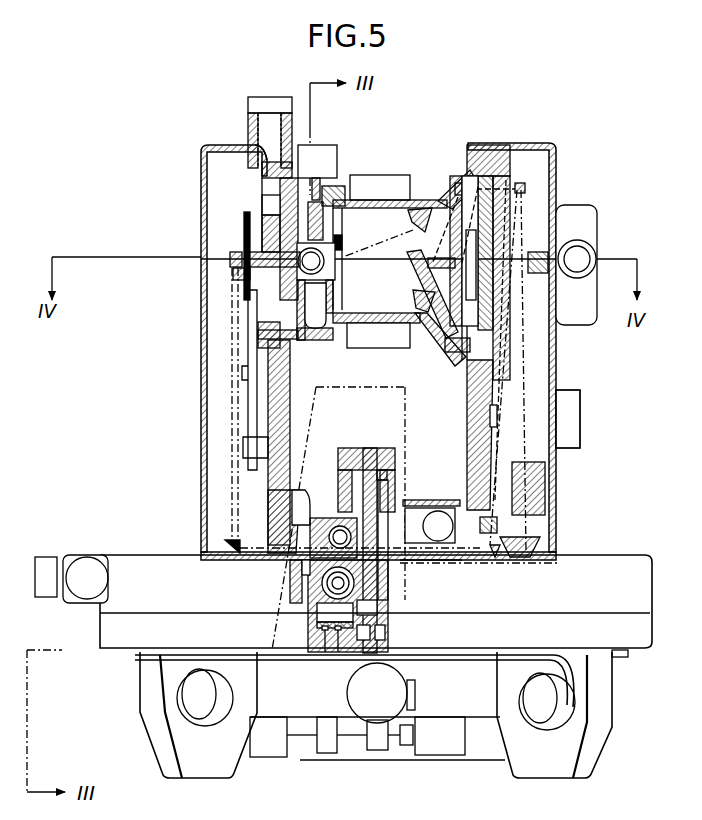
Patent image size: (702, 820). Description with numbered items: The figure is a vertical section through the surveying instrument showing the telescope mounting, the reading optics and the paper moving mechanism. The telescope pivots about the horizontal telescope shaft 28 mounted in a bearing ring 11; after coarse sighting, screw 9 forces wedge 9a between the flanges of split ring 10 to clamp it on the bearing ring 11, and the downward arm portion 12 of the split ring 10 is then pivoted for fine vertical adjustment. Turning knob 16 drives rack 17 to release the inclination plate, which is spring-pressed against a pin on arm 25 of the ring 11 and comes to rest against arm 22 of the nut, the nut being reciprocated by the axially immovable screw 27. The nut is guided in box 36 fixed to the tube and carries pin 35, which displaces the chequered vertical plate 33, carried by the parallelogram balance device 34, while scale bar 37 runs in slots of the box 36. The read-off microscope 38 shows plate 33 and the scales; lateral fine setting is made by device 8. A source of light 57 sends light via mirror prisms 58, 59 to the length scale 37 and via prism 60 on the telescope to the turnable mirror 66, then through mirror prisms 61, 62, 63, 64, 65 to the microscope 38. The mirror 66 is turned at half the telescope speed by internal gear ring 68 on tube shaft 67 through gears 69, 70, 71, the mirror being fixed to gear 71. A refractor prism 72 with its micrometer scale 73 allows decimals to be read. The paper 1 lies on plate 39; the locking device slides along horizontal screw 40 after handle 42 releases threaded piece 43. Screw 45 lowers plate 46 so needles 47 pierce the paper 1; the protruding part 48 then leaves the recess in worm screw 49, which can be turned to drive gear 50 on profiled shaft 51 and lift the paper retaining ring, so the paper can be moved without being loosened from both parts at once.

The paper 1 is at (458, 660).
The device 8 is at (88, 568).
The screw 9 is at (265, 128).
The wedge 9a is at (262, 152).
The split ring 10 is at (280, 353).
The bearing ring 11 is at (268, 343).
The arm portion 12 is at (280, 423).
The knob 16 is at (318, 150).
The rack 17 is at (332, 190).
The arm 22 is at (336, 243).
The arm 25 is at (337, 296).
The screw 27 is at (337, 272).
The telescope shaft 28 is at (325, 338).
The vertical plate 33 is at (246, 220).
The balance device 34 is at (255, 362).
The pin 35 is at (258, 252).
The box 36 is at (273, 243).
The scale bar 37 is at (387, 232).
The read-off microscope 38 is at (582, 257).
The plate 39 is at (487, 662).
The horizontal screw 40 is at (312, 528).
The handle 42 is at (310, 513).
The threaded piece 43 is at (317, 534).
The screw 45 is at (383, 495).
The plate 46 is at (380, 633).
The needles 47 is at (333, 660).
The upwardly protruding part 48 is at (357, 608).
The worm screw 49 is at (380, 483).
The gear 50 is at (310, 622).
The profiled shaft 51 is at (322, 583).
The source of light 57 is at (442, 522).
The mirror prism 58 is at (486, 530).
The mirror prism 59 is at (428, 338).
The mirror prism 60 is at (423, 235).
The mirror prism 61 is at (467, 173).
The mirror prism 62 is at (524, 190).
The mirror prism 63 is at (523, 539).
The mirror prism 64 is at (553, 270).
The mirror prism 65 is at (568, 419).
The turnable mirror 66 is at (417, 282).
The tube shaft 67 is at (468, 385).
The internal gear ring 68 is at (517, 188).
The gear 69 is at (503, 317).
The gear 70 is at (502, 245).
The gear 71 is at (462, 358).
The prism 72 is at (547, 487).
The scale 73 is at (496, 417).